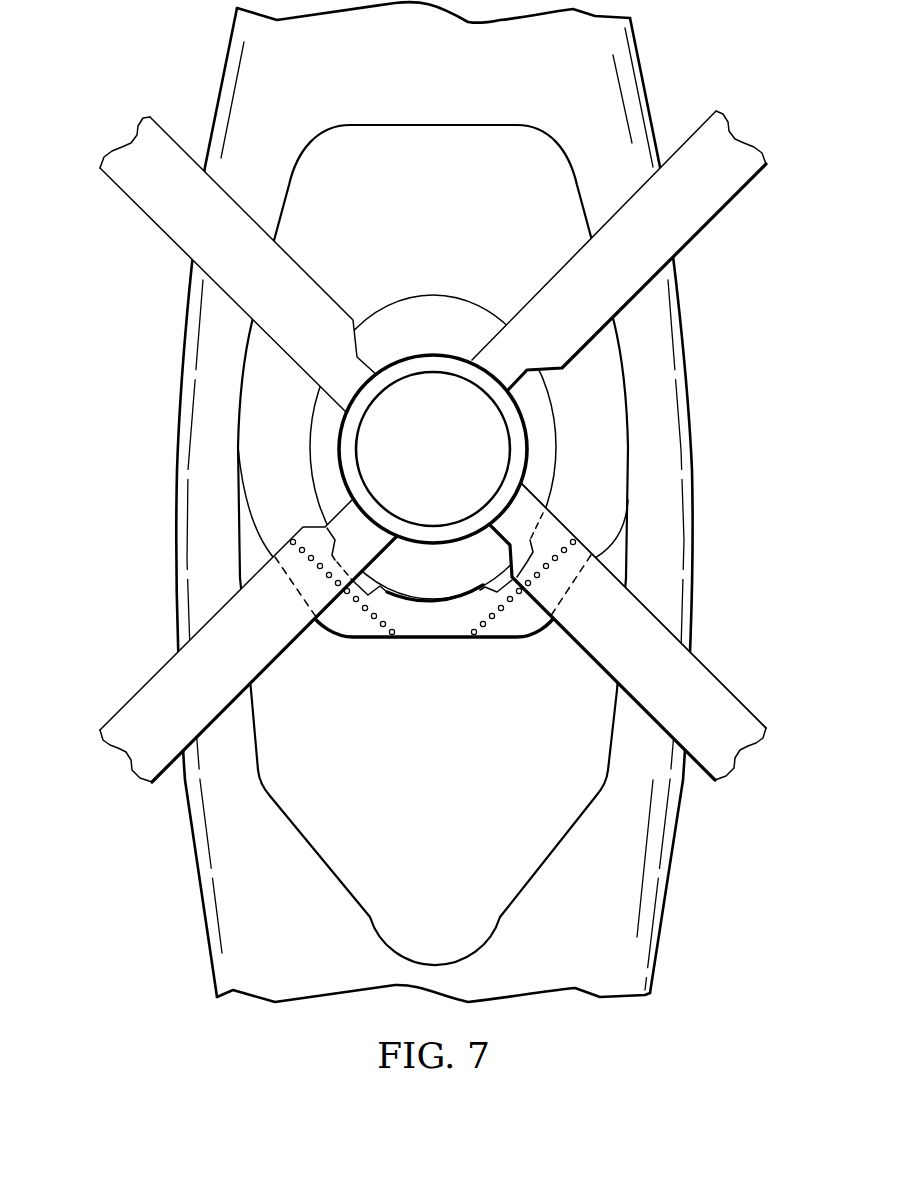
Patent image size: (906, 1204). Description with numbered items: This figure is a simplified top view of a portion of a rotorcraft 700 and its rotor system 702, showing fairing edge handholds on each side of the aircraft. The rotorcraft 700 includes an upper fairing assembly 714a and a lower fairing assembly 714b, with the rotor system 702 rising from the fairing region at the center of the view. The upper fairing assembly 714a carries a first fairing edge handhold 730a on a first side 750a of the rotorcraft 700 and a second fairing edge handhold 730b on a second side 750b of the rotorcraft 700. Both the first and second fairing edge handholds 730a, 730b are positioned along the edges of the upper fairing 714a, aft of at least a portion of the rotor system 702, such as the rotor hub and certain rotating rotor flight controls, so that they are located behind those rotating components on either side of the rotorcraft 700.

The rotorcraft 700 is at (123, 332).
The rotor system 702 is at (431, 353).
The upper fairing assembly 714a is at (268, 450).
The lower fairing assembly 714b is at (200, 492).
The first fairing edge handhold 730a is at (381, 571).
The second fairing edge handhold 730b is at (494, 575).
The first side 750a is at (178, 538).
The second side 750b is at (690, 487).